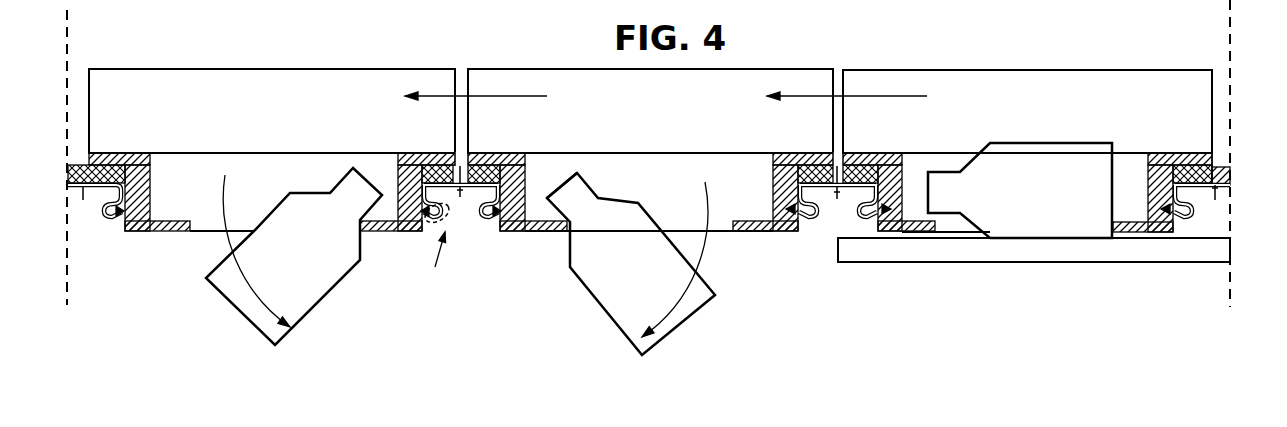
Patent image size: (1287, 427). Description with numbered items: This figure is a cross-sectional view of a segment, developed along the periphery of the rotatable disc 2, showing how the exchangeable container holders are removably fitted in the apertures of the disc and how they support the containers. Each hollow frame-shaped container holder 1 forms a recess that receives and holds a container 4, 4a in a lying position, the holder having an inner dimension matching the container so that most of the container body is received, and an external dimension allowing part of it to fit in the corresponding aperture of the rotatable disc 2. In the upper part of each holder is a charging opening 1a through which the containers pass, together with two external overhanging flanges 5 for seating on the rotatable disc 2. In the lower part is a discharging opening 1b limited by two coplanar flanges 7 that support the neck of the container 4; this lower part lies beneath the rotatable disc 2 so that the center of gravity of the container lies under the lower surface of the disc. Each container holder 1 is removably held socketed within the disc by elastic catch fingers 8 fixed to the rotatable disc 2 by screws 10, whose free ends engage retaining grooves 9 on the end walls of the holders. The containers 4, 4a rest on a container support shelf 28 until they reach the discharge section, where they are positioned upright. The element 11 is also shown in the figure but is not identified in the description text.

The hollow frame-shaped container holder 1 is at (162, 156).
The charging opening 1a is at (685, 153).
The discharging opening 1b is at (720, 233).
The rotatable disc 2 is at (1232, 174).
The container 4 is at (308, 305).
The container 4a is at (561, 180).
The external overhanging flange 5 is at (119, 160).
The coplanar flange 7 is at (165, 233).
The elastic catch finger 8 is at (107, 216).
The retaining groove 9 is at (412, 233).
The screw 10 is at (822, 168).
The panel 11 is at (205, 85).
The container support shelf 28 is at (975, 265).